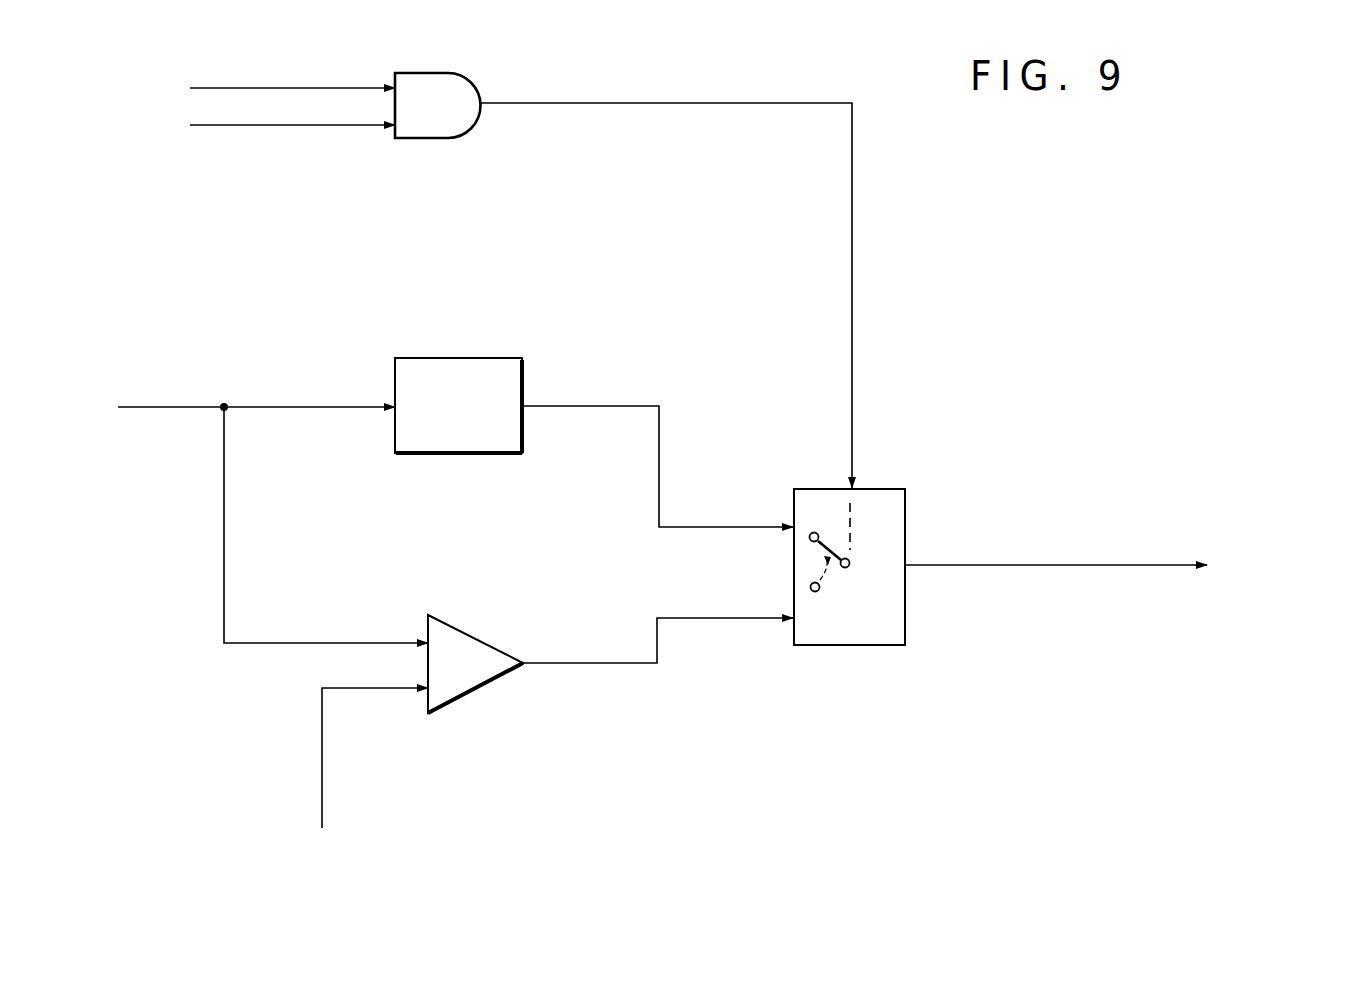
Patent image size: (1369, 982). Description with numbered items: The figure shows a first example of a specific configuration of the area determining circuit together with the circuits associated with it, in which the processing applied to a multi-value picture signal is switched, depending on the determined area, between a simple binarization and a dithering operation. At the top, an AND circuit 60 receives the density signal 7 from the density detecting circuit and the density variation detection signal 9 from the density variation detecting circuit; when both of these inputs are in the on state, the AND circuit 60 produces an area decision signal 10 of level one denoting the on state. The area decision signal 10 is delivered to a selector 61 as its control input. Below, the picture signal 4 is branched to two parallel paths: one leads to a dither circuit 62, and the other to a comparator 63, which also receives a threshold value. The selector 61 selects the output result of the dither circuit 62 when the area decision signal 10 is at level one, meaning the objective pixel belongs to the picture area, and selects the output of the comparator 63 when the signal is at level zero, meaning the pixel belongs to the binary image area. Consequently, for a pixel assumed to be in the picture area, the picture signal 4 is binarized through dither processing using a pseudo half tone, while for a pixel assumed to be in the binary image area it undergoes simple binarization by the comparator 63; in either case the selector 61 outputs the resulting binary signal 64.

The density signal 7 is at (282, 55).
The density variation detection signal 9 is at (246, 158).
The AND circuit 60 is at (448, 138).
The area decision signal 10 is at (540, 103).
The picture signal 4 is at (260, 494).
The dither circuit 62 is at (477, 358).
The comparator 63 is at (483, 690).
The selector 61 is at (900, 488).
The binary signal 64 is at (1116, 582).